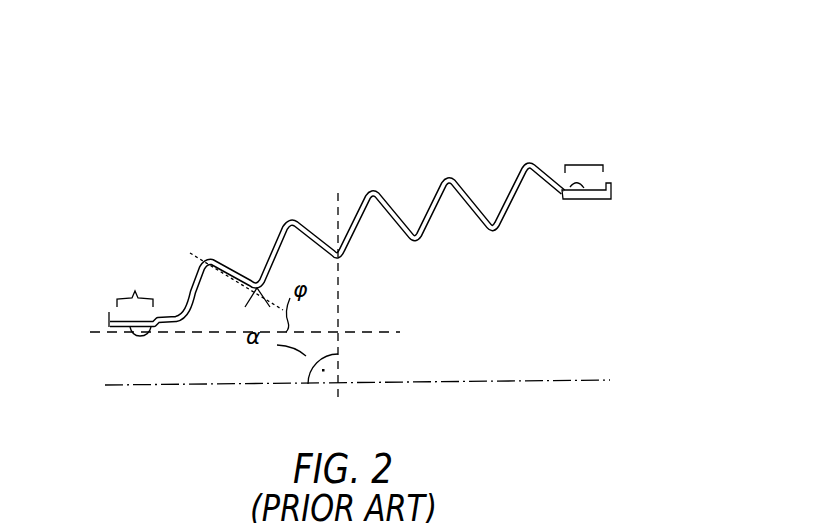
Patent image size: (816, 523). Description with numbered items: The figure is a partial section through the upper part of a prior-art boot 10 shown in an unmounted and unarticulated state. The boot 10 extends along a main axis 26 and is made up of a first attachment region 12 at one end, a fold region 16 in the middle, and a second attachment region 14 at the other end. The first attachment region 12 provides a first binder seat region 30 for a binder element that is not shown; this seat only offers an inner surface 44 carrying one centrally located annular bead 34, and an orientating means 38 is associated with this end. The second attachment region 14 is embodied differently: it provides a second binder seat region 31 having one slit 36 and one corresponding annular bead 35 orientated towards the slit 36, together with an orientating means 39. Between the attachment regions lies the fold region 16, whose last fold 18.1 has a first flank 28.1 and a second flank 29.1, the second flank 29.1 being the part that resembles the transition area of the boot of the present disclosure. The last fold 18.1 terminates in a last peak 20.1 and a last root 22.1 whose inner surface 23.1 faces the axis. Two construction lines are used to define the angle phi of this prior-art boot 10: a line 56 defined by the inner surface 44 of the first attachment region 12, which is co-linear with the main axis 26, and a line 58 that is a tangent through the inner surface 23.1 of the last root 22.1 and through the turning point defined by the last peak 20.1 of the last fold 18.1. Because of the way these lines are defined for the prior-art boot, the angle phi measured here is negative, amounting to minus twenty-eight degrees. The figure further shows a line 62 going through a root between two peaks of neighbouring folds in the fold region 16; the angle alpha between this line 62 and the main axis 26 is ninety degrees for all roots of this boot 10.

The boot 10 is at (512, 67).
The first attachment region 12 is at (126, 235).
The second attachment region 14 is at (610, 117).
The fold region 16 is at (383, 110).
The last fold 18.1 is at (204, 208).
The last peak 20.1 is at (203, 257).
The last root 22.1 is at (219, 316).
The inner surface of last root 23.1 is at (254, 292).
The main axis 26 is at (106, 386).
The first flank of last fold 28.1 is at (190, 284).
The second flank of last fold 29.1 is at (232, 262).
The first binder seat region 30 is at (123, 285).
The second binder seat region 31 is at (583, 165).
The annular bead 34 is at (133, 334).
The annular bead 35 is at (583, 200).
The slit 36 is at (563, 199).
The orientating means 38 is at (108, 314).
The orientating means 39 is at (613, 181).
The inner surface 44 is at (148, 336).
The line 56 is at (397, 333).
The line 58 is at (309, 325).
The line 62 is at (341, 297).